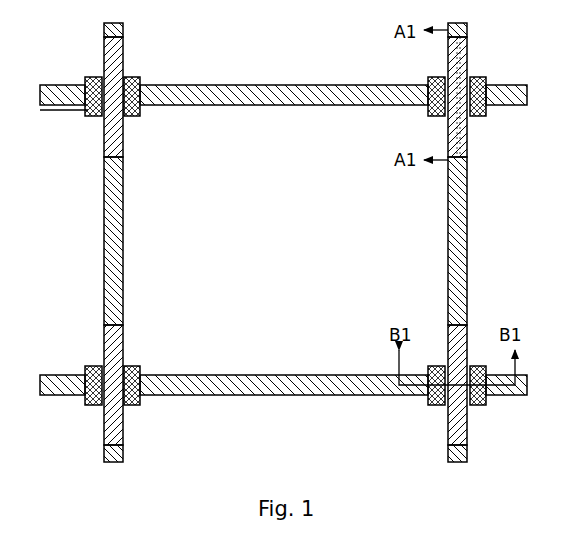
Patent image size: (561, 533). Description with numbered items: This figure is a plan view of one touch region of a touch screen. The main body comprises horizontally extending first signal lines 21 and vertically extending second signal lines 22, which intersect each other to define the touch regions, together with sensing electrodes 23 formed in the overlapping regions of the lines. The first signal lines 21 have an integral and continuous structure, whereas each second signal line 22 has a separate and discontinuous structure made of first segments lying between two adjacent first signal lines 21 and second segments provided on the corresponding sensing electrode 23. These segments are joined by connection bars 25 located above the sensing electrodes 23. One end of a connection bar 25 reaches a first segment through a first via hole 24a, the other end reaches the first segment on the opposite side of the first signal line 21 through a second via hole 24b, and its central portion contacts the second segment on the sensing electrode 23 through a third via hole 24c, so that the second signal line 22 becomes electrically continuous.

The first signal line 21 is at (283, 240).
The second signal line 22 is at (285, 242).
The sensing electrode 23 is at (285, 352).
The first via hole 24a is at (253, 115).
The second via hole 24b is at (64, 98).
The third via hole 24c is at (285, 114).
The connection bar 25 is at (255, 365).